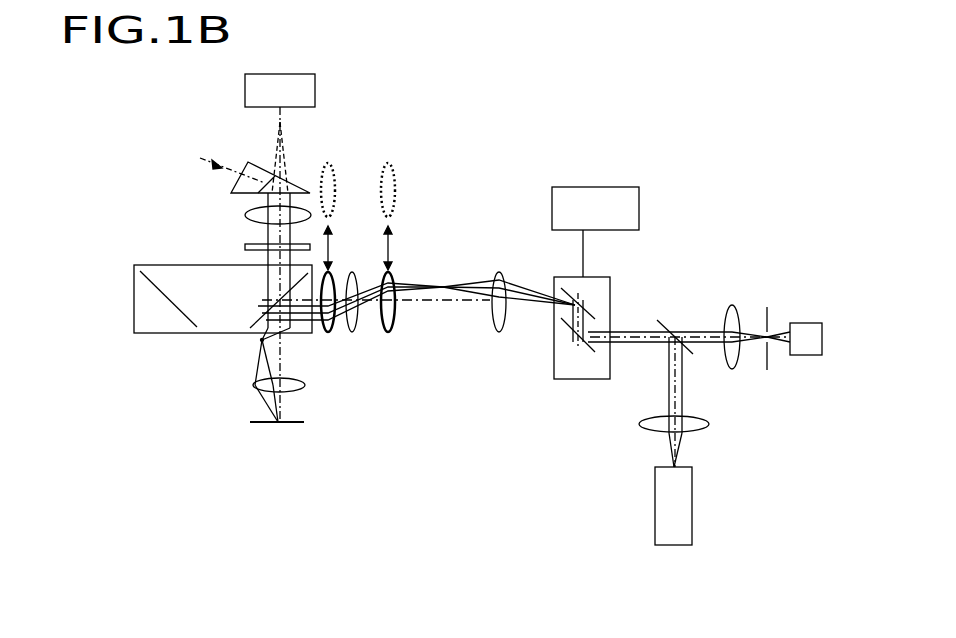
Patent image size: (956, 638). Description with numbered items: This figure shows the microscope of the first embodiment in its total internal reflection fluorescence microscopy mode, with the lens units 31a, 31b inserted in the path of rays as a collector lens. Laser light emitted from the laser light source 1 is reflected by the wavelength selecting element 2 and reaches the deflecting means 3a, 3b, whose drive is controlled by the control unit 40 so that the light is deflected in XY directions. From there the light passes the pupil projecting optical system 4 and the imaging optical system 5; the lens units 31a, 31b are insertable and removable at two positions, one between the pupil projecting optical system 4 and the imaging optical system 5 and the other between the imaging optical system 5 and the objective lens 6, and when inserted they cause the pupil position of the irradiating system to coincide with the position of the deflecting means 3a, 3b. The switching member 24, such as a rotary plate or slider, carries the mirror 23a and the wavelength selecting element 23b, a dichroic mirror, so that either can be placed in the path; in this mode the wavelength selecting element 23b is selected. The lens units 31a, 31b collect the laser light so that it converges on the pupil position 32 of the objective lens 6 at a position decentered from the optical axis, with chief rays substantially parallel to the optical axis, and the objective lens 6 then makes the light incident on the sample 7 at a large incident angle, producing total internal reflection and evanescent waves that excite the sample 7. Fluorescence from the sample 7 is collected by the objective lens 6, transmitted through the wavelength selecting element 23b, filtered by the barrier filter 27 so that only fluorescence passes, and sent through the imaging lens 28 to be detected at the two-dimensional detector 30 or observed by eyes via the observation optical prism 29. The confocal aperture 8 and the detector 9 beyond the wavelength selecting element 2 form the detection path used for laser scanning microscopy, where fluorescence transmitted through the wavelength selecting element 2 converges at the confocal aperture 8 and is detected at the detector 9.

The laser light source 1 is at (693, 505).
The wavelength selecting element 2 is at (668, 318).
The deflecting means 3a is at (586, 347).
The deflecting means 3b is at (584, 305).
The pupil projecting optical system 4 is at (500, 273).
The imaging optical system 5 is at (353, 273).
The objective lens 6 is at (253, 383).
The sample 7 is at (250, 420).
The confocal aperture 8 is at (767, 307).
The detector 9 is at (805, 323).
The mirror 23a is at (165, 305).
The wavelength selecting element 23b is at (260, 326).
The switching member 24 is at (147, 265).
The barrier filter 27 is at (246, 247).
The imaging lens 28 is at (246, 215).
The observation optical prism 29 is at (237, 184).
The two-dimensional detector 30 is at (245, 82).
The lens unit 31a is at (334, 333).
The lens unit 31b is at (390, 338).
The pupil position 32 is at (258, 340).
The control unit 40 is at (617, 187).